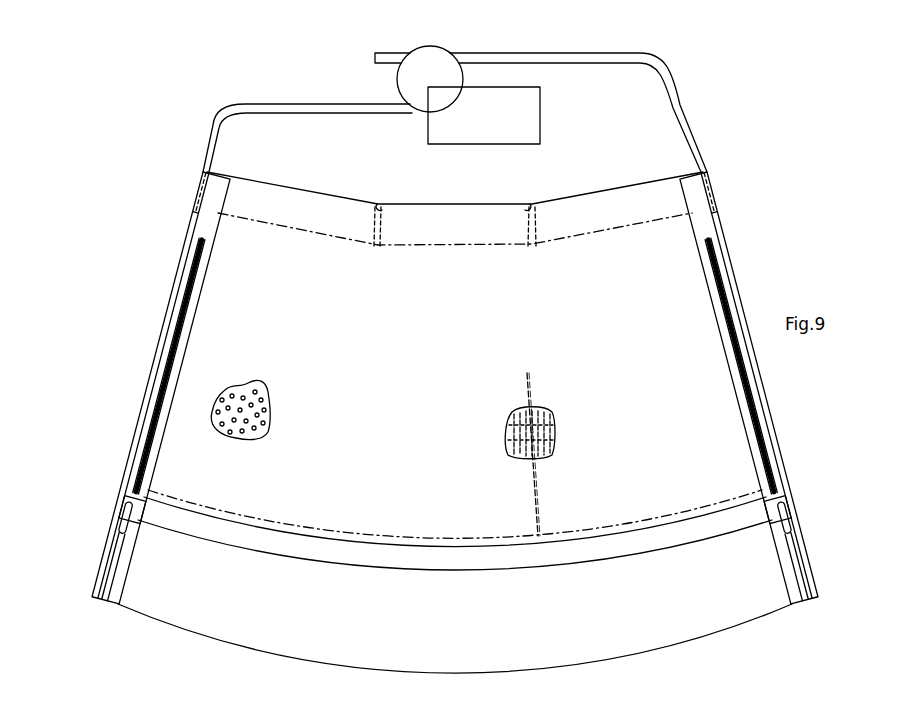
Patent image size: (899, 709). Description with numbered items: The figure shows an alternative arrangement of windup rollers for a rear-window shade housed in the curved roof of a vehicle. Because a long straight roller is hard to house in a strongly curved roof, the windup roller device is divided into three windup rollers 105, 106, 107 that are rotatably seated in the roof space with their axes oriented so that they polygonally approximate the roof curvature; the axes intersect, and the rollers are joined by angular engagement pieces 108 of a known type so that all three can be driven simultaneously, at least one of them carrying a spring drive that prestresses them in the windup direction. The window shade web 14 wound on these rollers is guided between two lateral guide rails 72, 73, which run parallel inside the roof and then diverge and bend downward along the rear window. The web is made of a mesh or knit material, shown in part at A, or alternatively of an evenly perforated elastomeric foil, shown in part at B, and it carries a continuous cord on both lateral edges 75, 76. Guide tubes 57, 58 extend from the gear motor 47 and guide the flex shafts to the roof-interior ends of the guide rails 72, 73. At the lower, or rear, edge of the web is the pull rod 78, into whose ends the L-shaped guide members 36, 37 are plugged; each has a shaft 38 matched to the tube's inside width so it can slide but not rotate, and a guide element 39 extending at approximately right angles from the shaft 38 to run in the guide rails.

The window shade web 14 is at (457, 395).
The guide member 36 is at (150, 540).
The guide member 37 is at (772, 497).
The shaft 38 is at (135, 500).
The guide element 39 is at (120, 515).
The gear motor 47 is at (442, 68).
The guide tube 57 is at (278, 102).
The guide tube 58 is at (613, 57).
The guide rail 72 is at (805, 543).
The guide rail 73 is at (105, 543).
The lateral edge 75 is at (188, 340).
The lateral edge 76 is at (710, 312).
The pull rod 78 is at (493, 555).
The windup roller 105 is at (295, 203).
The windup roller 106 is at (443, 215).
The windup roller 107 is at (605, 195).
The angular engagement piece 108 is at (377, 207).
The mesh material A is at (555, 441).
The perforated elastomeric foil B is at (272, 392).